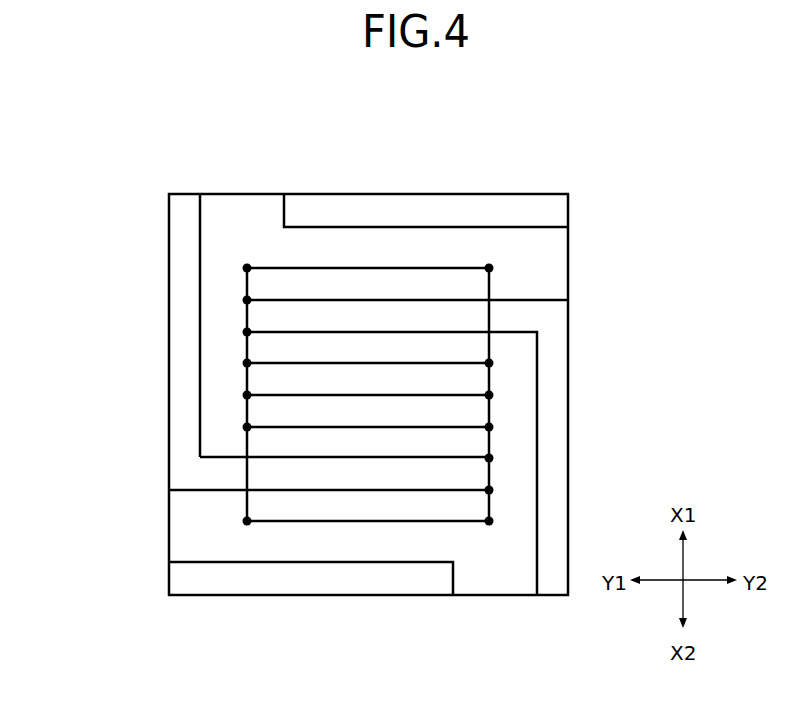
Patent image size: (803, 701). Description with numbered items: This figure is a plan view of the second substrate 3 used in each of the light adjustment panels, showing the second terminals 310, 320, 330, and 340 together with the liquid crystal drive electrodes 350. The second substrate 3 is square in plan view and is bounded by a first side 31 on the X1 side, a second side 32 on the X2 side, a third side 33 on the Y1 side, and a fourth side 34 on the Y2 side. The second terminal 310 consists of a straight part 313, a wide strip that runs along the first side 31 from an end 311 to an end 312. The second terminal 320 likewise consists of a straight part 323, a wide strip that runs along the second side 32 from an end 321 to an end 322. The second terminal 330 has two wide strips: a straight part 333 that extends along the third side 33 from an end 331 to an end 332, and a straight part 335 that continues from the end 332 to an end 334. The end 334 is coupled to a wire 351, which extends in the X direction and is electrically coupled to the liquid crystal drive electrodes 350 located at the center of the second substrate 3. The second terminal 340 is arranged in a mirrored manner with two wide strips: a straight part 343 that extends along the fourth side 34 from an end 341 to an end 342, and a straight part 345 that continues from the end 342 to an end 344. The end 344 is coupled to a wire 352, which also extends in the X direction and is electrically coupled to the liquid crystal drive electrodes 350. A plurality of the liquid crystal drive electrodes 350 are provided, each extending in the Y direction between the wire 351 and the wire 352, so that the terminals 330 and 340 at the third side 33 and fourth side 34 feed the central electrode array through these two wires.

The second substrate 3 is at (630, 100).
The first side 31 is at (427, 174).
The second terminal 310 is at (328, 190).
The end 311 is at (569, 210).
The end 312 is at (283, 205).
The straight part 313 is at (465, 212).
The second side 32 is at (311, 625).
The second terminal 320 is at (433, 603).
The end 321 is at (169, 582).
The end 322 is at (453, 578).
The straight part 323 is at (357, 578).
The third side 33 is at (281, 397).
The second terminal 330 is at (162, 325).
The end 331 is at (184, 194).
The end 332 is at (185, 475).
The straight part 333 is at (185, 238).
The end 334 is at (247, 476).
The straight part 335 is at (223, 473).
The fourth side 34 is at (449, 440).
The second terminal 340 is at (564, 375).
The end 341 is at (553, 596).
The end 342 is at (552, 316).
The straight part 343 is at (552, 475).
The end 344 is at (489, 318).
The straight part 345 is at (513, 315).
The liquid crystal drive electrodes 350 is at (430, 397).
The wire 351 is at (247, 413).
The wire 352 is at (489, 440).